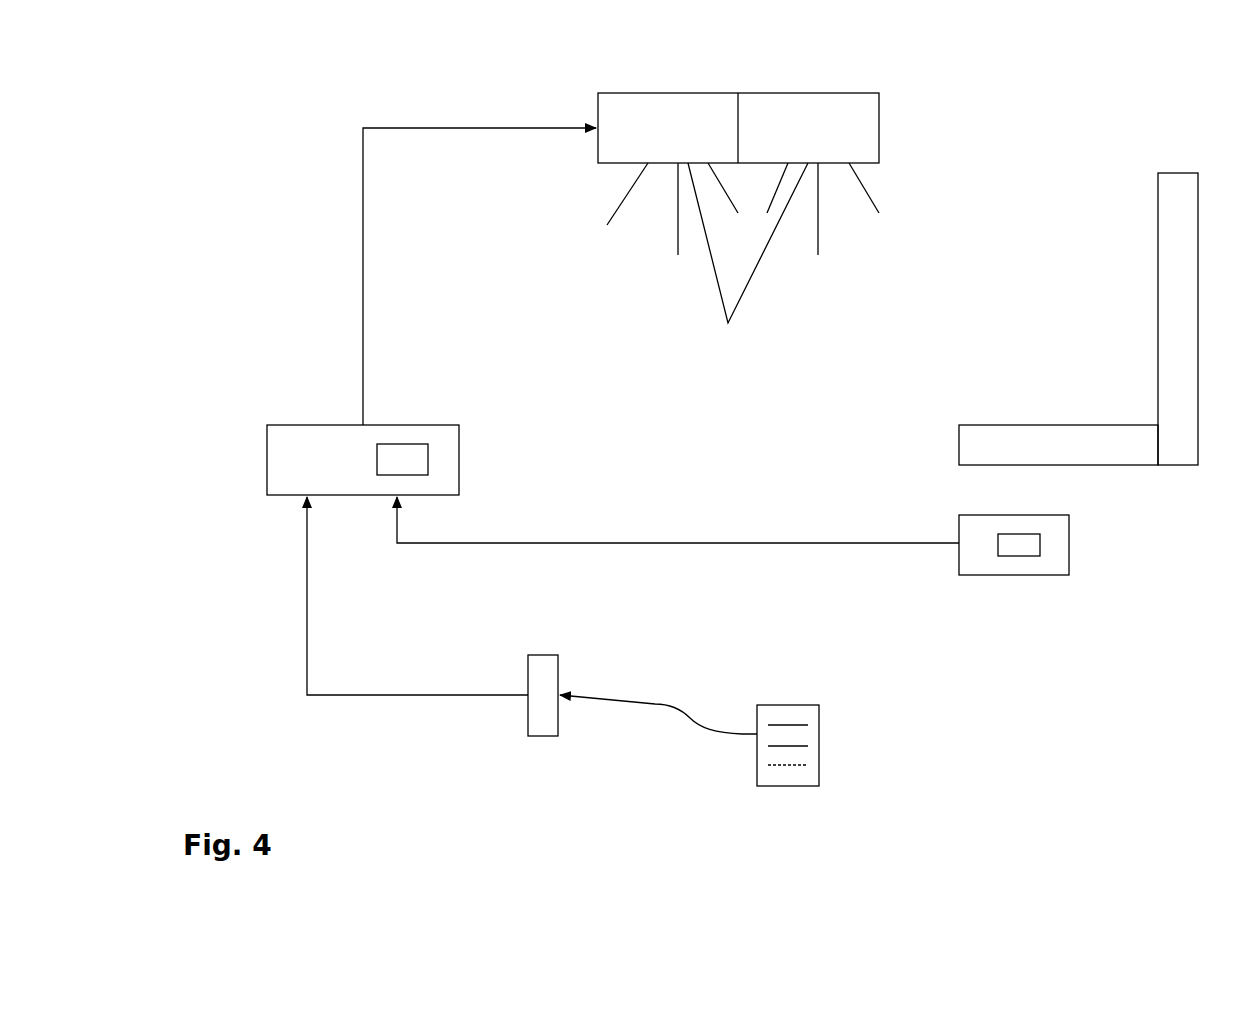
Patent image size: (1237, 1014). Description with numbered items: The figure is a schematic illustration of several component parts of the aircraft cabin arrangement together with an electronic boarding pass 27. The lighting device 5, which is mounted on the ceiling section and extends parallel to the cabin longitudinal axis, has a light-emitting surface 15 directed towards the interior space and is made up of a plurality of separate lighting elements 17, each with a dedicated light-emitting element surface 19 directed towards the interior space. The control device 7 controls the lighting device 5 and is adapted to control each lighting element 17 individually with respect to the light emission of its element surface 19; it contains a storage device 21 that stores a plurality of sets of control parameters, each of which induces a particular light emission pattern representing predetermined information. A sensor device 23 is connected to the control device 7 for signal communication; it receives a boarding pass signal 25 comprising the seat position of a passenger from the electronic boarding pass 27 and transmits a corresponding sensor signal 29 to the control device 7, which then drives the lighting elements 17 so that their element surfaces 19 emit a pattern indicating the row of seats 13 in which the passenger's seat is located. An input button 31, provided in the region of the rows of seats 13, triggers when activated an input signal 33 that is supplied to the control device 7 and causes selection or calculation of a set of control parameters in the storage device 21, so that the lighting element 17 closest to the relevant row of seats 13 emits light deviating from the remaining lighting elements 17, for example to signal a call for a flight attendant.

The lighting device 5 is at (932, 72).
The control device 7 is at (327, 455).
The rows of seats 13 is at (1180, 384).
The light-emitting surface 15 is at (616, 163).
The lighting elements 17 is at (808, 113).
The light-emitting element surface 19 is at (748, 266).
The storage device 21 is at (408, 455).
The sensor device 23 is at (539, 715).
The boarding pass signal 25 is at (662, 703).
The electronic boarding pass 27 is at (808, 735).
The sensor signal 29 is at (308, 605).
The input button 31 is at (1019, 545).
The input signal 33 is at (688, 543).